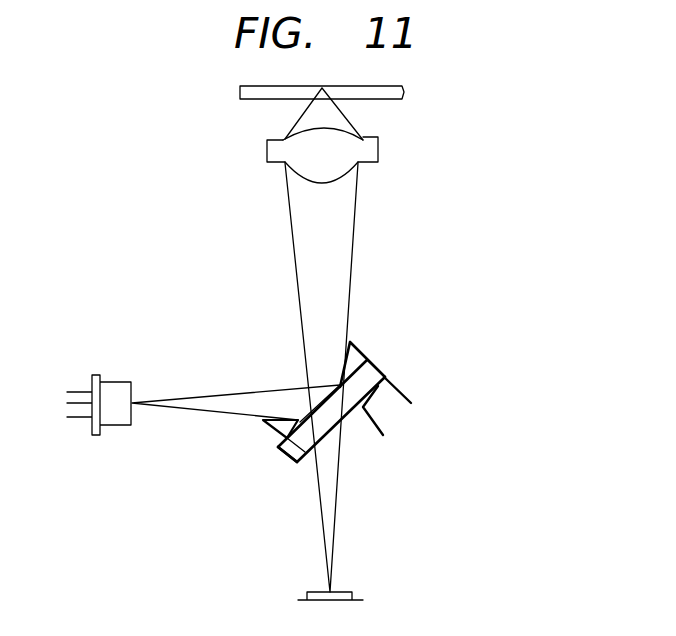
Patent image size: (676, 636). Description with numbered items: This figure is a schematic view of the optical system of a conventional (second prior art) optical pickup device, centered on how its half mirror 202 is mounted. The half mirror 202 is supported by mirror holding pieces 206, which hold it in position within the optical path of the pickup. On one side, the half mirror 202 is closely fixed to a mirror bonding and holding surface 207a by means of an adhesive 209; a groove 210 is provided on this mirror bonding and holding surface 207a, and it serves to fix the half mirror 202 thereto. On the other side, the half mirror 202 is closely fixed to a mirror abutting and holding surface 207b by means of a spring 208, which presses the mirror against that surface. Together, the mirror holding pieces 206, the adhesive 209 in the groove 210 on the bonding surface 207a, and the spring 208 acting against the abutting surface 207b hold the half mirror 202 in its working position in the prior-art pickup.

The half mirror 202 is at (287, 460).
The mirror holding pieces 206 is at (350, 344).
The mirror bonding and holding surface 207a is at (300, 421).
The mirror abutting and holding surface 207b is at (368, 362).
The spring 208 is at (383, 400).
The adhesive 209 is at (299, 470).
The groove 210 is at (278, 443).